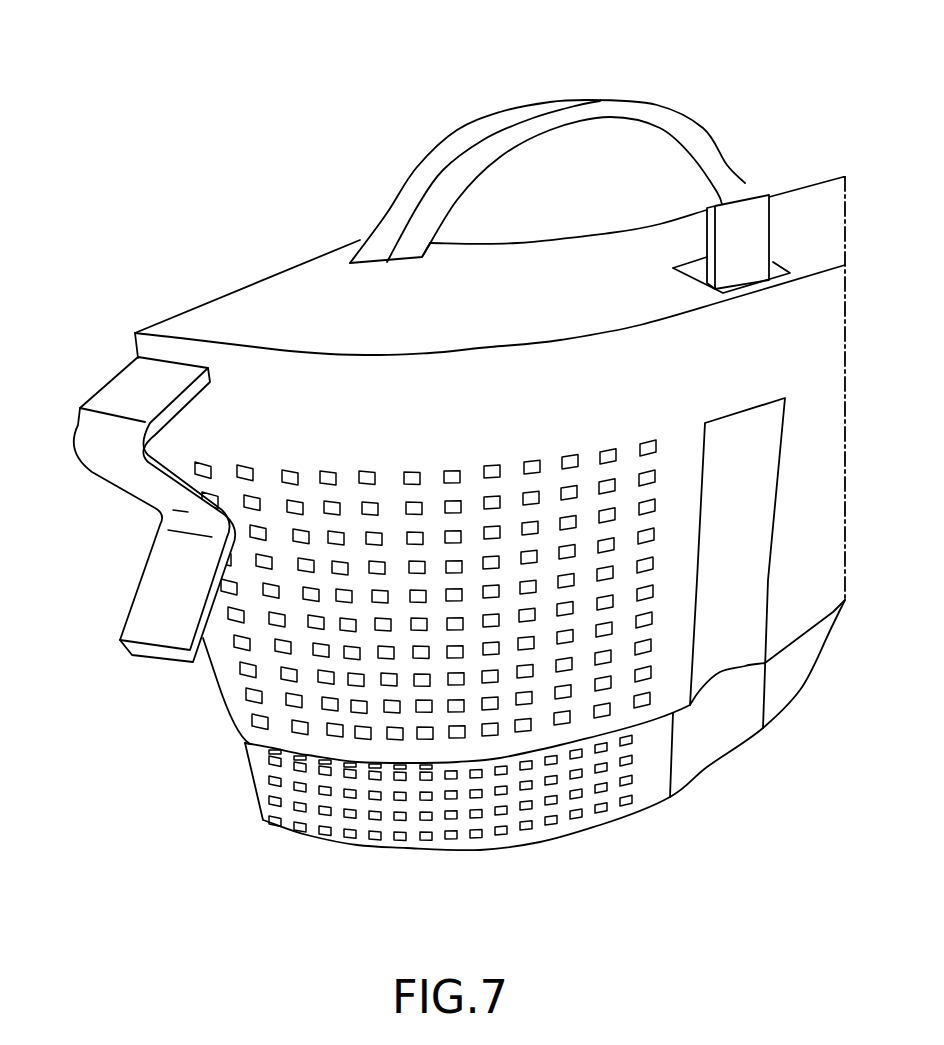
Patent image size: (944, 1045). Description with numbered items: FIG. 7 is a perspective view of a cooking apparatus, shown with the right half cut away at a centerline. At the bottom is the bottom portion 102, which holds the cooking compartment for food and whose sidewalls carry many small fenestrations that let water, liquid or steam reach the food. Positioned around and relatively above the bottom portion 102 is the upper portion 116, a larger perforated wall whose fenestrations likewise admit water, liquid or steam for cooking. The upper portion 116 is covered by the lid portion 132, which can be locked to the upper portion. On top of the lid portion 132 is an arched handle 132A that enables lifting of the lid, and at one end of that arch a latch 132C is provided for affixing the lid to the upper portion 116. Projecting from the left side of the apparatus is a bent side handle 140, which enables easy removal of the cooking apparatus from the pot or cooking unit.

The bottom portion 102 is at (486, 813).
The upper portion 116 is at (262, 650).
The lid portion 132 is at (312, 288).
The handle 132A is at (522, 124).
The latch 132C is at (753, 213).
The handle 140 is at (123, 468).